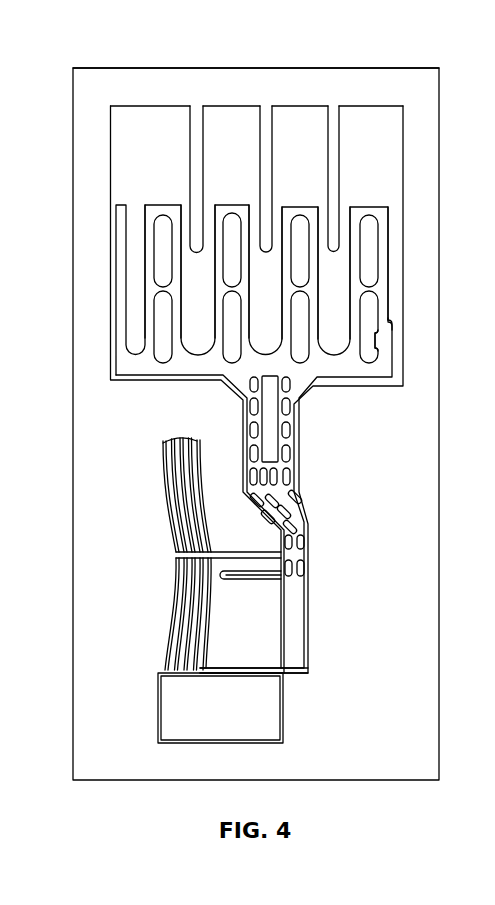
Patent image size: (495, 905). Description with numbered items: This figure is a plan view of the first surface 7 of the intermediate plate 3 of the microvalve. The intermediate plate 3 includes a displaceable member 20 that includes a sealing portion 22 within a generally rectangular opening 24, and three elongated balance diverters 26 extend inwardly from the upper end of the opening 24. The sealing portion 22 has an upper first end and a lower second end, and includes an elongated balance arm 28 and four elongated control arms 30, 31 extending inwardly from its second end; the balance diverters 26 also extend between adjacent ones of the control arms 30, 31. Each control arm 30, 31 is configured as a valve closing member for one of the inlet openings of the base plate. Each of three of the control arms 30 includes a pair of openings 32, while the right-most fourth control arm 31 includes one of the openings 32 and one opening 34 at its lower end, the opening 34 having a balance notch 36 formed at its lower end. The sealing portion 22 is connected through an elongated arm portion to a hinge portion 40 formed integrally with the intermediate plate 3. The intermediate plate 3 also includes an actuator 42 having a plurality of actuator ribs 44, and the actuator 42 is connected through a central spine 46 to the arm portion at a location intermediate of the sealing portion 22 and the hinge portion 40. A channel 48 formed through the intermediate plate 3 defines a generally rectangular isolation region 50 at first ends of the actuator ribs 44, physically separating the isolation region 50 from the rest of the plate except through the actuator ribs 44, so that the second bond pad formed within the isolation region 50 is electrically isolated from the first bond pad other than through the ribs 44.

The intermediate plate 3 is at (135, 68).
The first surface 7 is at (390, 78).
The displaceable member 20 is at (296, 452).
The sealing portion 22 is at (108, 280).
The generally rectangular opening 24 is at (118, 143).
The balance diverters 26 is at (198, 118).
The balance arm 28 is at (116, 228).
The control arms 30 is at (155, 212).
The fourth control arm 31 is at (370, 210).
The openings 32 is at (167, 215).
The opening 34 is at (383, 315).
The balance notch 36 is at (378, 352).
The hinge portion 40 is at (246, 587).
The actuator 42 is at (179, 547).
The actuator ribs 44 is at (198, 458).
The central spine 46 is at (243, 551).
The channel 48 is at (158, 702).
The isolation region 50 is at (270, 715).